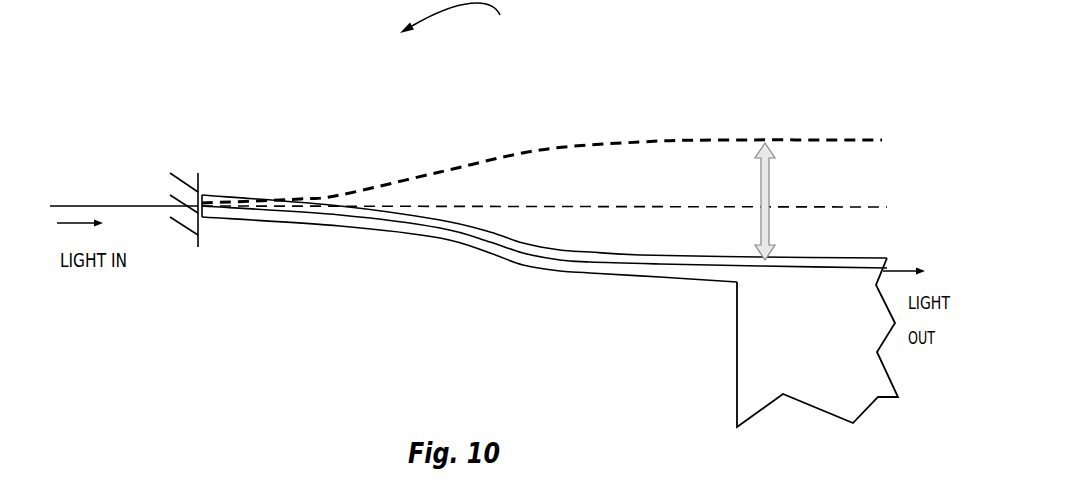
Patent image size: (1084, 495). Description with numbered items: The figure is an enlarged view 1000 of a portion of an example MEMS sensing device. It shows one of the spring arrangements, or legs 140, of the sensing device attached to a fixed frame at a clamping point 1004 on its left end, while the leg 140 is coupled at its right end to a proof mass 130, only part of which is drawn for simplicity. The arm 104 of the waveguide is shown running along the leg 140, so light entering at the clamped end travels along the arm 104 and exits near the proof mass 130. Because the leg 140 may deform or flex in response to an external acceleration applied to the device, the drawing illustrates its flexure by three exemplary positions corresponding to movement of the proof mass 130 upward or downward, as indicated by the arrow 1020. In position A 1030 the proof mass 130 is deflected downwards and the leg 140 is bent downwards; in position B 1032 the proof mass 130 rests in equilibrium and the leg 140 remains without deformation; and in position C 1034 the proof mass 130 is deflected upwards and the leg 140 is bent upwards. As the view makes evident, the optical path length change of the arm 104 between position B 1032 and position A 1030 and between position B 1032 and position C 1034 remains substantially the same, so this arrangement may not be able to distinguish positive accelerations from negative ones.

The enlarged view 1000 is at (474, 18).
The clamping point 1004 is at (199, 181).
The spring arrangement (leg) 140 is at (457, 247).
The arm of the waveguide 104 is at (588, 263).
The proof mass 130 is at (763, 375).
The arrow 1020 is at (773, 168).
The position A 1030 is at (865, 257).
The position B 1032 is at (887, 203).
The position C 1034 is at (838, 138).